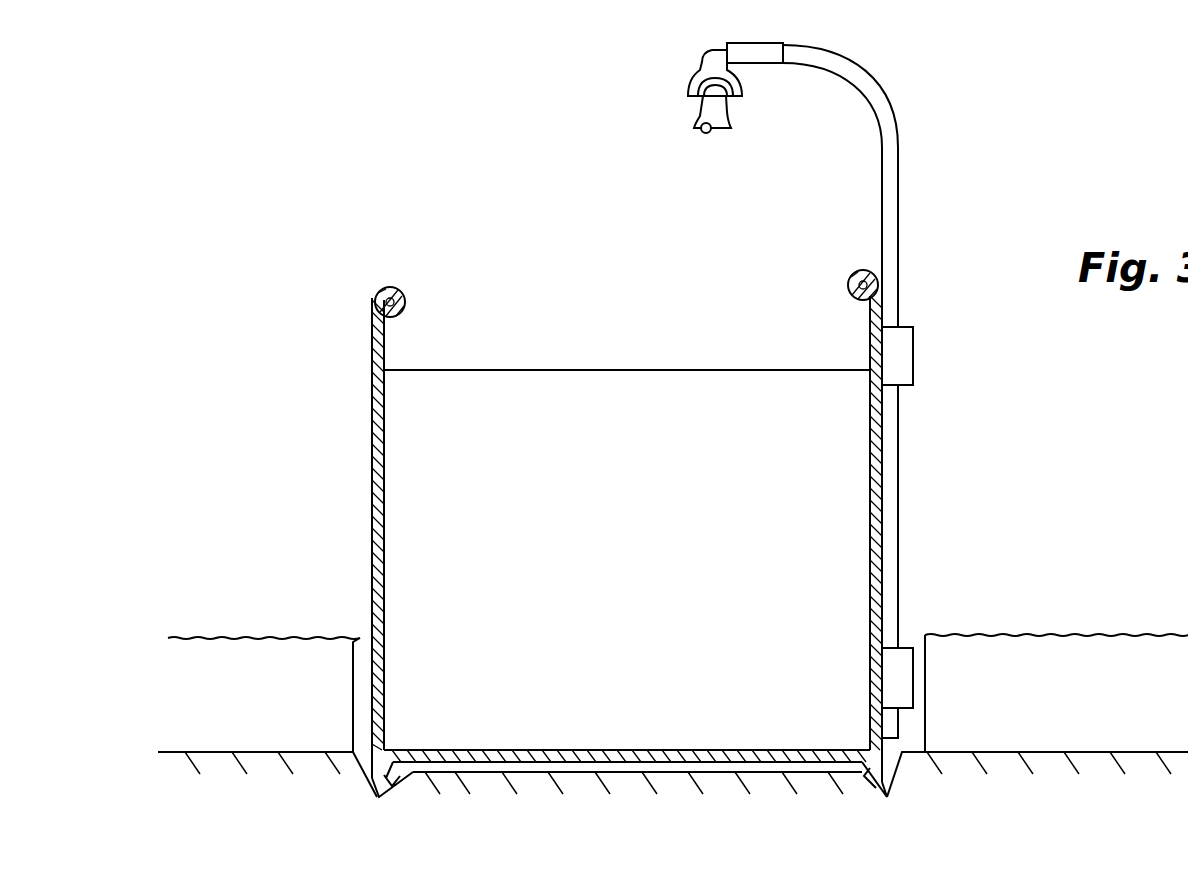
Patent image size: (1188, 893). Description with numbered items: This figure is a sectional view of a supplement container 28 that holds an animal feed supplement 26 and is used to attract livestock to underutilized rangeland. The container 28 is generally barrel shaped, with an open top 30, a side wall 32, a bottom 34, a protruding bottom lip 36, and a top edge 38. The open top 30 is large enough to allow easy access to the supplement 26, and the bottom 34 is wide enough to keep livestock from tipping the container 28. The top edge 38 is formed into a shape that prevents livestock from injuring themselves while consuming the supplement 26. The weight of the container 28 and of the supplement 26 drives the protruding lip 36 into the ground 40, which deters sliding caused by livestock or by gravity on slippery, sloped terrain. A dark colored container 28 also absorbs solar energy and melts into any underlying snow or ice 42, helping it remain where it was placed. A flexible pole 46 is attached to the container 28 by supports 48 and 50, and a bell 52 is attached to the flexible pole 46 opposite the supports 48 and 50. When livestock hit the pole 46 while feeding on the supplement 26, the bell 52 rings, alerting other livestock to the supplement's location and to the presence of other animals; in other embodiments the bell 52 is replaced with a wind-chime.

The animal feed supplement 26 is at (646, 578).
The container 28 is at (346, 184).
The open top 30 is at (593, 265).
The side wall 32 is at (372, 472).
The bottom 34 is at (632, 748).
The protruding bottom lip 36 is at (372, 780).
The top edge 38 is at (378, 294).
The ground 40 is at (230, 828).
The snow or ice 42 is at (282, 696).
The flexible pole 46 is at (898, 120).
The support 48 is at (913, 355).
The support 50 is at (913, 662).
The bell 52 is at (690, 90).